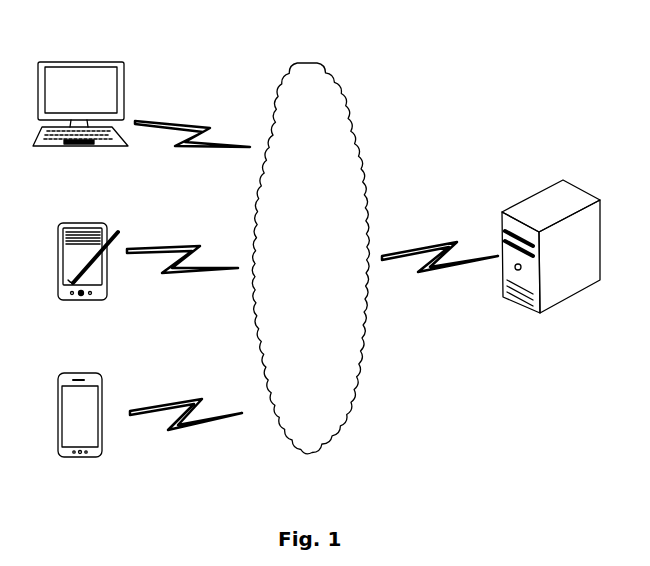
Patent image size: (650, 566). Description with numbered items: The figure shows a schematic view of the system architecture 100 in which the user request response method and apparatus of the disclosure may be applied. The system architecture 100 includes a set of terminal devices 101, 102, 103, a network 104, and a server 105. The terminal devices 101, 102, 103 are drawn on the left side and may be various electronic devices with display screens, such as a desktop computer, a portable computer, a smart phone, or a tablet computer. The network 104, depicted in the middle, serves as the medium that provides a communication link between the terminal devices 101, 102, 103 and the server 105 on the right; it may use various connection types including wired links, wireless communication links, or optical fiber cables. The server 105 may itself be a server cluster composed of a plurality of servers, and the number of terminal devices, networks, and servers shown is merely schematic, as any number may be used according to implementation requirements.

The system architecture 100 is at (568, 28).
The terminal device 101 is at (80, 430).
The terminal device 102 is at (88, 277).
The terminal device 103 is at (80, 118).
The network 104 is at (310, 258).
The server 105 is at (551, 261).